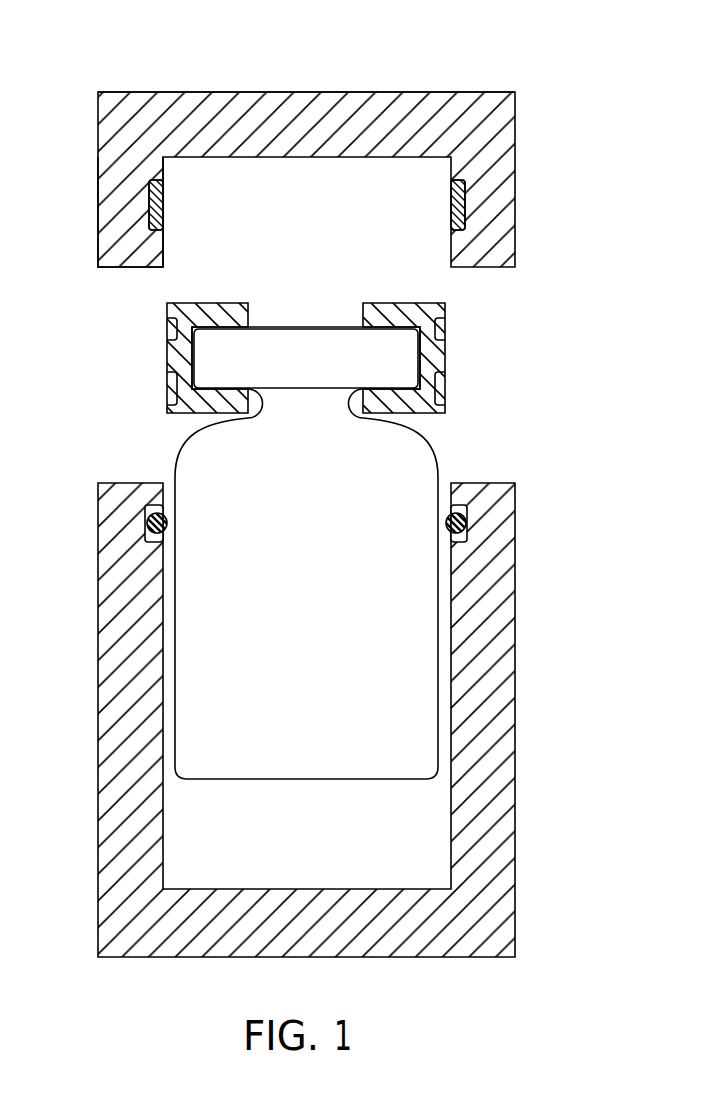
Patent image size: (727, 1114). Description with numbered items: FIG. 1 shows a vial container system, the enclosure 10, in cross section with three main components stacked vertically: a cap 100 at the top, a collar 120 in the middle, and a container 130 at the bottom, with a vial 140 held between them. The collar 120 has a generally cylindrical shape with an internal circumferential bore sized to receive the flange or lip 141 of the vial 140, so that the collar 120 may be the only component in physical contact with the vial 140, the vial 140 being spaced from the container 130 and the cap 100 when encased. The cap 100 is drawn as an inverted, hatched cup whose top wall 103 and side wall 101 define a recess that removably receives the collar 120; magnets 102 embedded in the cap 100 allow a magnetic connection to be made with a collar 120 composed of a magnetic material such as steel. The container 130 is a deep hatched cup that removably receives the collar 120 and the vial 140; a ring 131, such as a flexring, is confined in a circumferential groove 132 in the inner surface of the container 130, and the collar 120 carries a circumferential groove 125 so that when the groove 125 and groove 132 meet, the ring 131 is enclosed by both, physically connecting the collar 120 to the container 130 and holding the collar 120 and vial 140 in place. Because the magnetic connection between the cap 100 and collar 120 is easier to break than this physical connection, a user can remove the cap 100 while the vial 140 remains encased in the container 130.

The enclosure 10 is at (366, 62).
The cap 100 is at (510, 157).
The cap side wall 101 is at (103, 190).
The magnets 102 is at (455, 198).
The cap top wall 103 is at (250, 93).
The collar 120 is at (440, 358).
The circumferential groove of the collar 125 is at (444, 390).
The flange or lip 141 is at (410, 360).
The vial 140 is at (426, 470).
The container 130 is at (505, 715).
The ring 131 is at (462, 521).
The circumferential groove of the container 132 is at (476, 542).